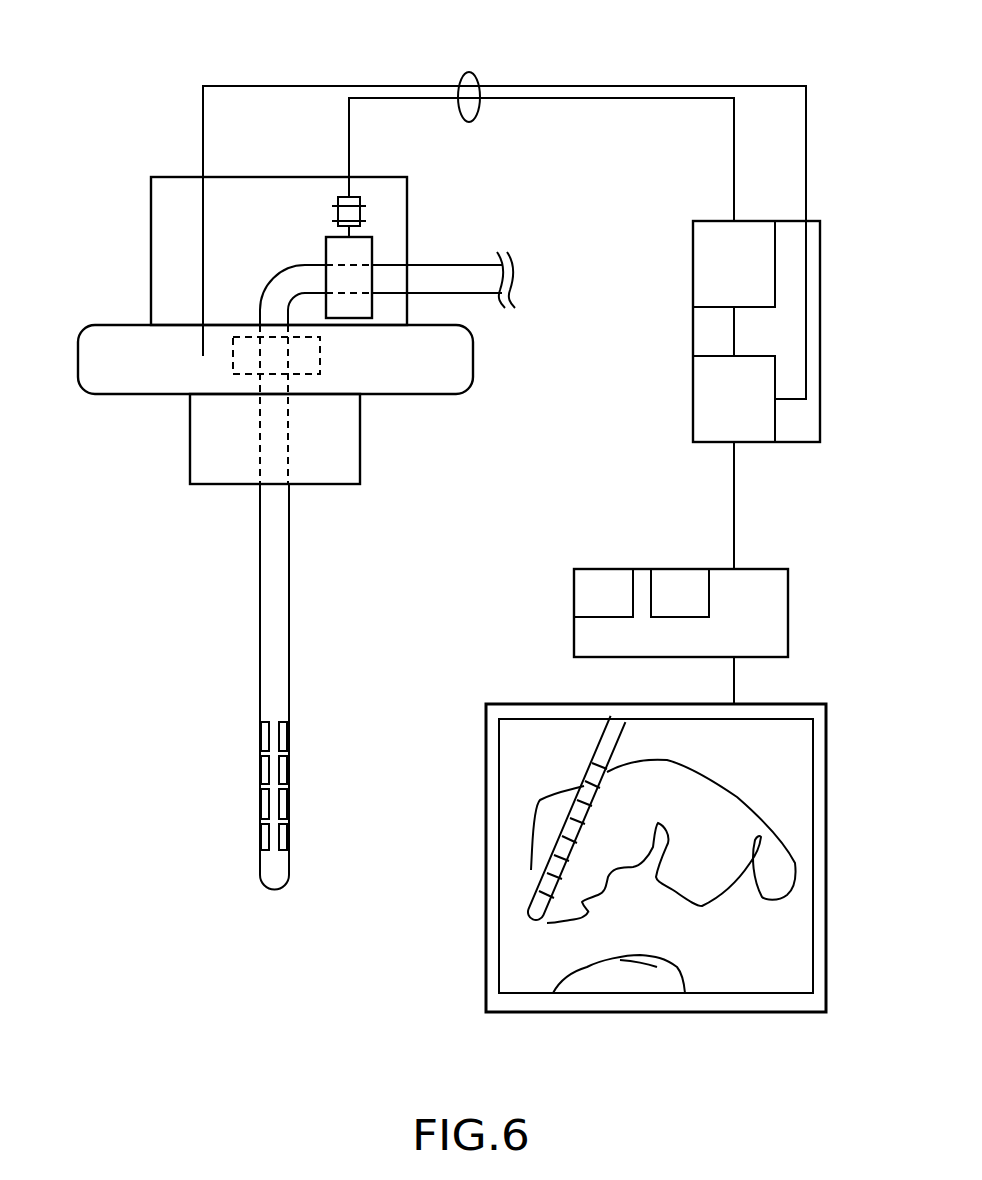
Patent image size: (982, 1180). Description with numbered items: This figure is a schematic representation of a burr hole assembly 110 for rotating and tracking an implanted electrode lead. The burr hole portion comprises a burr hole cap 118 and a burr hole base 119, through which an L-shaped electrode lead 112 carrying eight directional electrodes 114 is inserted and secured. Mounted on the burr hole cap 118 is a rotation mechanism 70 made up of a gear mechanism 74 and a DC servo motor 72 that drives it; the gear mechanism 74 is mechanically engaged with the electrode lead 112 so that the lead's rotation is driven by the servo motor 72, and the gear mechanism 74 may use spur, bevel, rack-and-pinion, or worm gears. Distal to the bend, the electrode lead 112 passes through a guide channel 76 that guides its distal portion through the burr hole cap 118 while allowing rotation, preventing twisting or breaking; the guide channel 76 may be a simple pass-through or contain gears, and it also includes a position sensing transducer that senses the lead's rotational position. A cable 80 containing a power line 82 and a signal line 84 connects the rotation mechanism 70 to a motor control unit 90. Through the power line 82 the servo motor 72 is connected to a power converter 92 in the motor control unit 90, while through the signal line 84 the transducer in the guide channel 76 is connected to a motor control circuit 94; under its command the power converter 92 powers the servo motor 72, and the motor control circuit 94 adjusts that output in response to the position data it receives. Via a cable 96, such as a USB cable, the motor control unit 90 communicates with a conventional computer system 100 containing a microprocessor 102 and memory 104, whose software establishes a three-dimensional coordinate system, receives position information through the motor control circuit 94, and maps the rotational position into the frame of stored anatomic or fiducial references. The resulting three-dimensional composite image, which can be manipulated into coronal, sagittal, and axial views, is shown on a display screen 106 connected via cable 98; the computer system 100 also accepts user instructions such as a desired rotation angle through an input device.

The rotation mechanism 70 is at (151, 247).
The DC servo motor 72 is at (337, 197).
The gear mechanism 74 is at (372, 245).
The guide channel 76 is at (320, 355).
The cable 80 is at (475, 122).
The power line 82 is at (603, 98).
The signal line 84 is at (588, 86).
The motor control unit 90 is at (711, 331).
The power converter 92 is at (749, 272).
The motor control circuit 94 is at (749, 412).
The cable 96 is at (734, 497).
The cable 98 is at (734, 678).
The computer system 100 is at (628, 613).
The microprocessor 102 is at (625, 606).
The memory 104 is at (701, 606).
The display screen 106 is at (553, 1012).
The burr hole assembly 110 is at (203, 553).
The electrode lead 112 is at (288, 600).
The directional electrodes 114 is at (289, 800).
The burr hole cap 118 is at (453, 395).
The burr hole base 119 is at (360, 455).